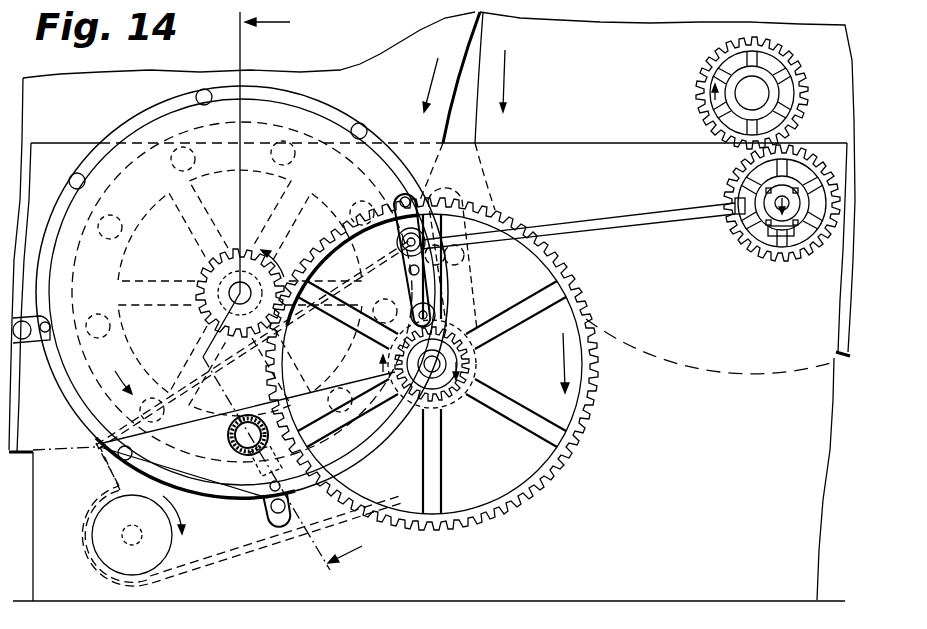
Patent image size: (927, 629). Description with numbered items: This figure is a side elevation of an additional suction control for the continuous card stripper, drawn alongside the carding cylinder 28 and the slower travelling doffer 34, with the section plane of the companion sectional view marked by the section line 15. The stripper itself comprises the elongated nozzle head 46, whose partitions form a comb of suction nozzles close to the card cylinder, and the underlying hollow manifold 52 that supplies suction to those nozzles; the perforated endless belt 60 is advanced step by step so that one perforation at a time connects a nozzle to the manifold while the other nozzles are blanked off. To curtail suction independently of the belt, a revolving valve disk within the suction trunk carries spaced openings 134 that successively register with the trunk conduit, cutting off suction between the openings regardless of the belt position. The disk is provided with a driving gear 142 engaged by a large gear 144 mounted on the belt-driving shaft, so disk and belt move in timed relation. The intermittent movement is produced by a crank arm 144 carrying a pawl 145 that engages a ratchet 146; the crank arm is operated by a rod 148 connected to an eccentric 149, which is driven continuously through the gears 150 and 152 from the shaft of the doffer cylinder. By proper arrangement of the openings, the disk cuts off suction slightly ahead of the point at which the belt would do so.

The section line 15 is at (298, 291).
The carding cylinder 28 is at (428, 106).
The doffer 34 is at (531, 111).
The nozzle head 46 is at (220, 426).
The manifold 52 is at (245, 444).
The belt 60 is at (393, 364).
The openings 134 is at (118, 184).
The driving gear 142 is at (203, 278).
The large gear 144 is at (432, 286).
The pawl 145 is at (428, 307).
The ratchet 146 is at (482, 376).
The rod 148 is at (600, 224).
The eccentric 149 is at (733, 254).
The gear 150 is at (740, 180).
The gear 152 is at (698, 90).